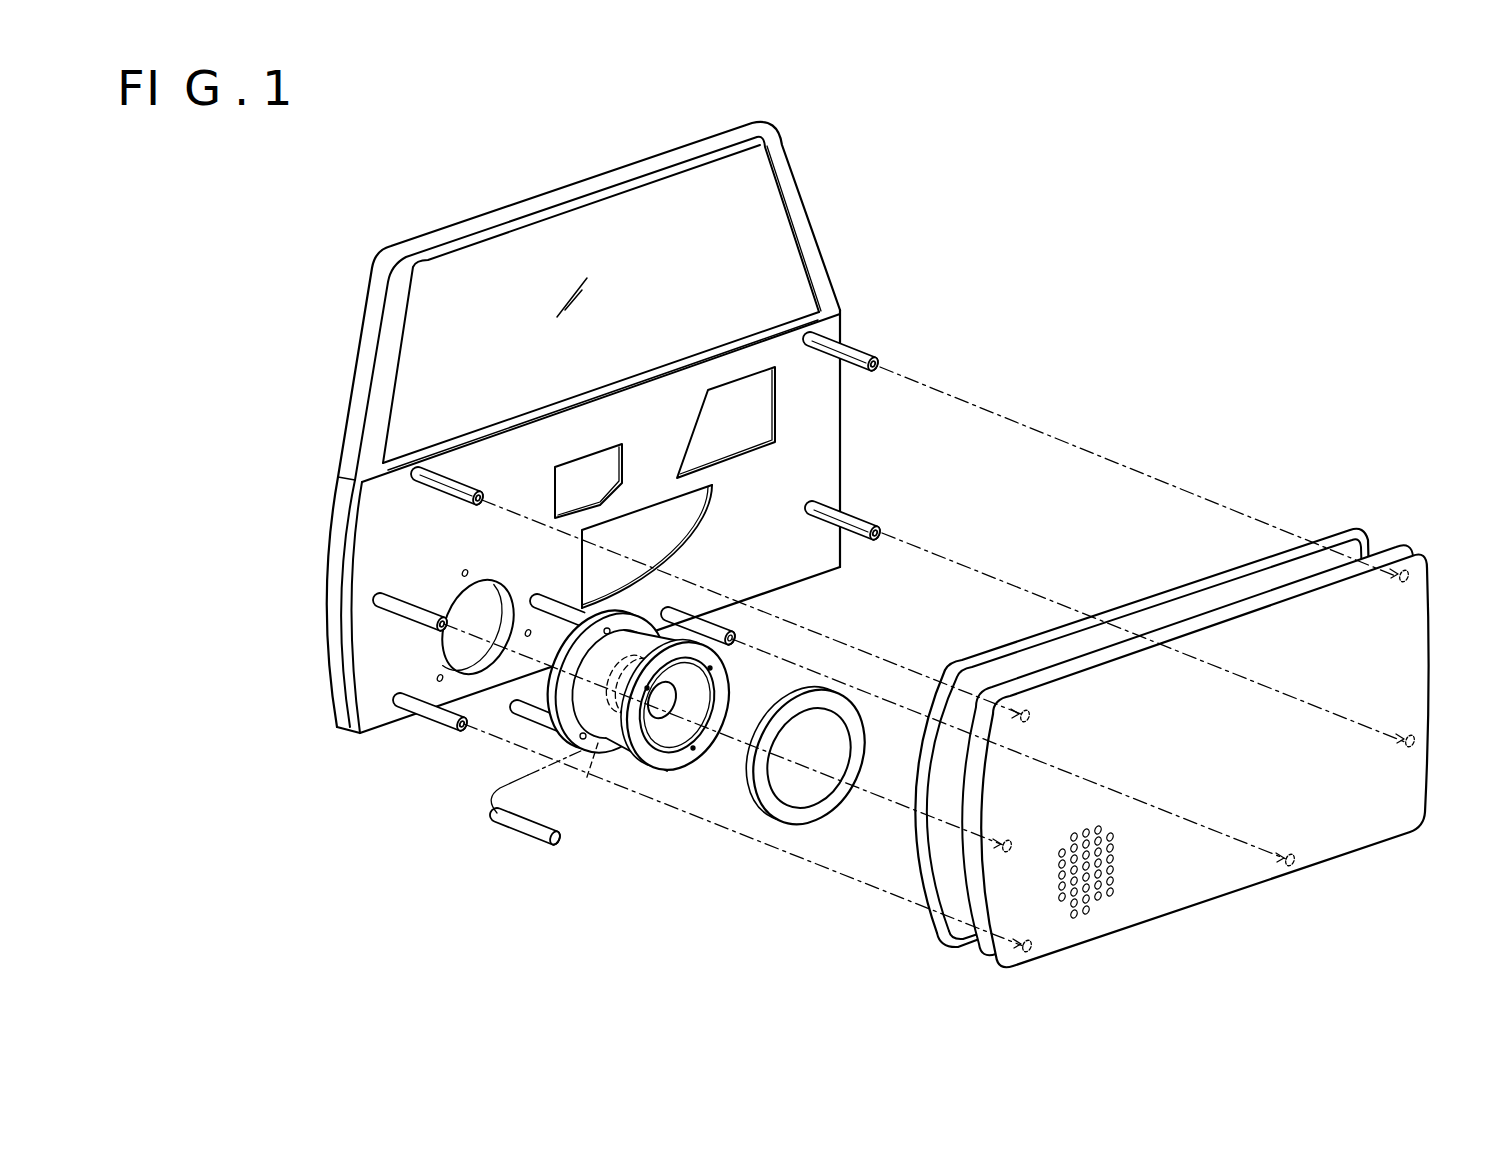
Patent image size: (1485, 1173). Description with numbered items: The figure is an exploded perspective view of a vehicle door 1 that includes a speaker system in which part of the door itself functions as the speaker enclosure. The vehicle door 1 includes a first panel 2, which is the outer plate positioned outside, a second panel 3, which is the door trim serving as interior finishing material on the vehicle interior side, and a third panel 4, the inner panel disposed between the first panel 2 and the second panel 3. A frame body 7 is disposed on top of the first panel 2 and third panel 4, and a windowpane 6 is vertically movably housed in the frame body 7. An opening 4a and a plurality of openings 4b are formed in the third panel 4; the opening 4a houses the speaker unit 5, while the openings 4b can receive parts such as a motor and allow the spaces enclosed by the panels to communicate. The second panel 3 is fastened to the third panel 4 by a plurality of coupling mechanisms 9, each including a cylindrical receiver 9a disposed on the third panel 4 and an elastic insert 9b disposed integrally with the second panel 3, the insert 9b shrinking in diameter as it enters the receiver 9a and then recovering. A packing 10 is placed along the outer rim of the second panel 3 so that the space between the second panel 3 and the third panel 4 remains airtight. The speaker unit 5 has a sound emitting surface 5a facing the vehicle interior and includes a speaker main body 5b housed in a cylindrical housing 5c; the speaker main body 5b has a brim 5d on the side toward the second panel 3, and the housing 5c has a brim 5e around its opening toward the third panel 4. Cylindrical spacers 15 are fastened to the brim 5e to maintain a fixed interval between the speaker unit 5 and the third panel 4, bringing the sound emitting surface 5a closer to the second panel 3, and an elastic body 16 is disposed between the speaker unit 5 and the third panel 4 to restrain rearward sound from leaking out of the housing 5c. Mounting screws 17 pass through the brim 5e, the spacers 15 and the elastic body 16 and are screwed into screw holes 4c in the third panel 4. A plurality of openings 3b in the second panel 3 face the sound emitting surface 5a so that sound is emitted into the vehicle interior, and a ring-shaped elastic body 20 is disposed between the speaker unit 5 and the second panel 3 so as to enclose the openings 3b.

The vehicle door 1 is at (331, 328).
The first panel 2 is at (338, 490).
The second panel 3 is at (1365, 792).
The openings 3b is at (1118, 905).
The third panel 4 is at (812, 405).
The opening 4a is at (458, 607).
The openings 4b is at (650, 525).
The screw holes 4c is at (468, 572).
The speaker unit 5 is at (677, 685).
The sound emitting surface 5a is at (690, 740).
The speaker main body 5b is at (610, 735).
The housing 5c is at (708, 622).
The brim 5d is at (683, 768).
The brim 5e is at (600, 612).
The windowpane 6 is at (783, 272).
The frame body 7 is at (795, 188).
The coupling mechanisms 9 is at (478, 496).
The receiver 9a is at (835, 340).
The insert 9b is at (1400, 580).
The packing 10 is at (1152, 600).
The spacers 15 is at (517, 734).
The elastic body 16 is at (565, 605).
The mounting screws 17 is at (525, 836).
The elastic body 20 is at (850, 798).